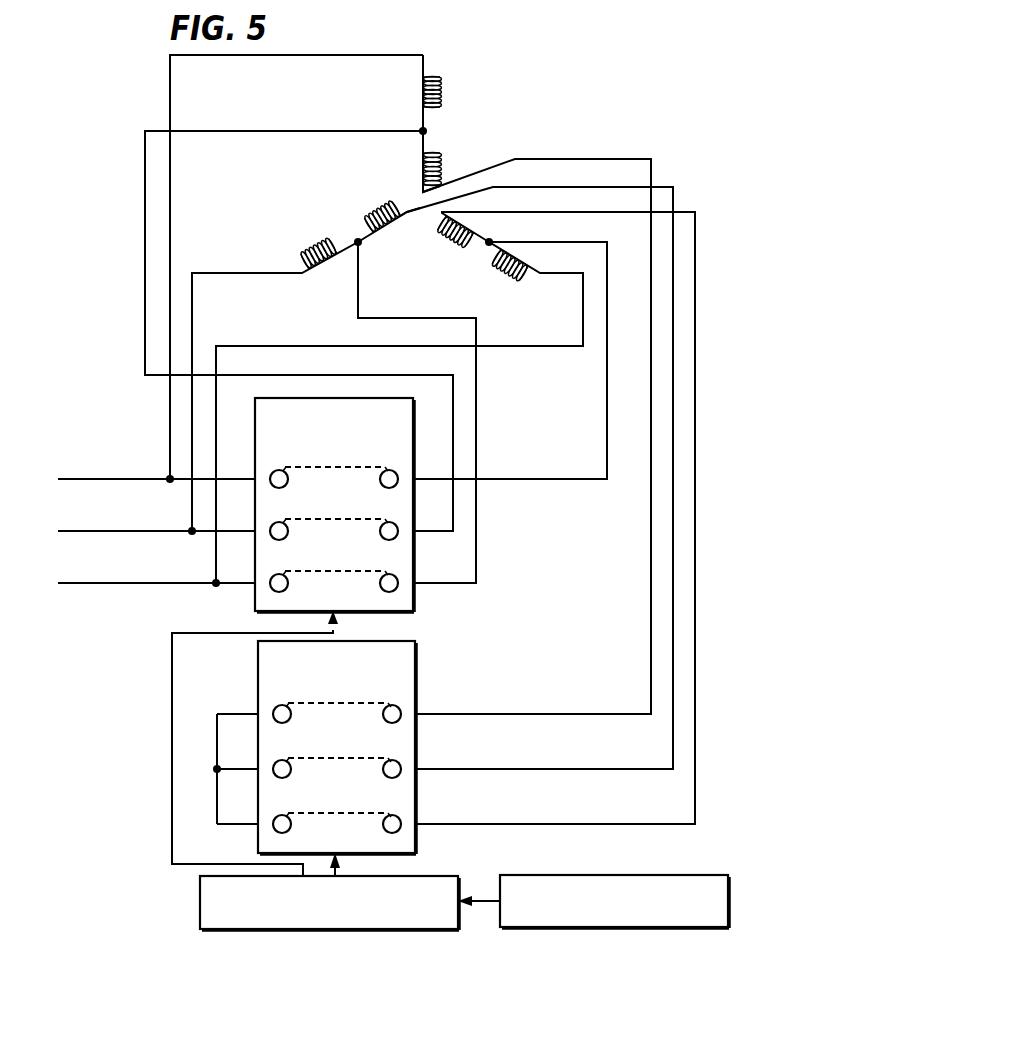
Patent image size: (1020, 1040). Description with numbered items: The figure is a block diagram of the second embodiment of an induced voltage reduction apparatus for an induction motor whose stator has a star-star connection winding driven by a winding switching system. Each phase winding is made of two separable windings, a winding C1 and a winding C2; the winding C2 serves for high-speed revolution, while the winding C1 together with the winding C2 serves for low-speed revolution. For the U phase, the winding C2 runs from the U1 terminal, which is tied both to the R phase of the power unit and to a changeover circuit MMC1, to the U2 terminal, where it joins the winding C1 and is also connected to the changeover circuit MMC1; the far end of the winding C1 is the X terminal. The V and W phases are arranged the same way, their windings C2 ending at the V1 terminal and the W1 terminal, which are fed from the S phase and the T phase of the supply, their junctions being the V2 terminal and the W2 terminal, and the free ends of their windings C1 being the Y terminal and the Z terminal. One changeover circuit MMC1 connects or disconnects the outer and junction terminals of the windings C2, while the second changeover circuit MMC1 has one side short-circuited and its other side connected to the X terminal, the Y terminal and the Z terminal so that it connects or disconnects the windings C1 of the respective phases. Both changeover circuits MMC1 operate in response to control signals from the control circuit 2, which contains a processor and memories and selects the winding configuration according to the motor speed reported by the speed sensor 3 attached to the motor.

The control circuit 2 is at (329, 903).
The speed sensor 3 is at (614, 901).
The changeover circuit MMC1 is at (335, 626).
The winding C1 is at (413, 207).
The winding C2 is at (414, 186).
The U1 terminal U1 is at (421, 48).
The U2 terminal U2 is at (438, 131).
The V1 terminal V1 is at (300, 285).
The V2 terminal V2 is at (347, 229).
The W1 terminal W1 is at (543, 289).
The W2 terminal W2 is at (505, 232).
The X terminal X is at (421, 190).
The Y terminal Y is at (410, 223).
The Z terminal Z is at (456, 200).
The R phase R is at (146, 481).
The S phase S is at (146, 533).
The T phase T is at (146, 585).